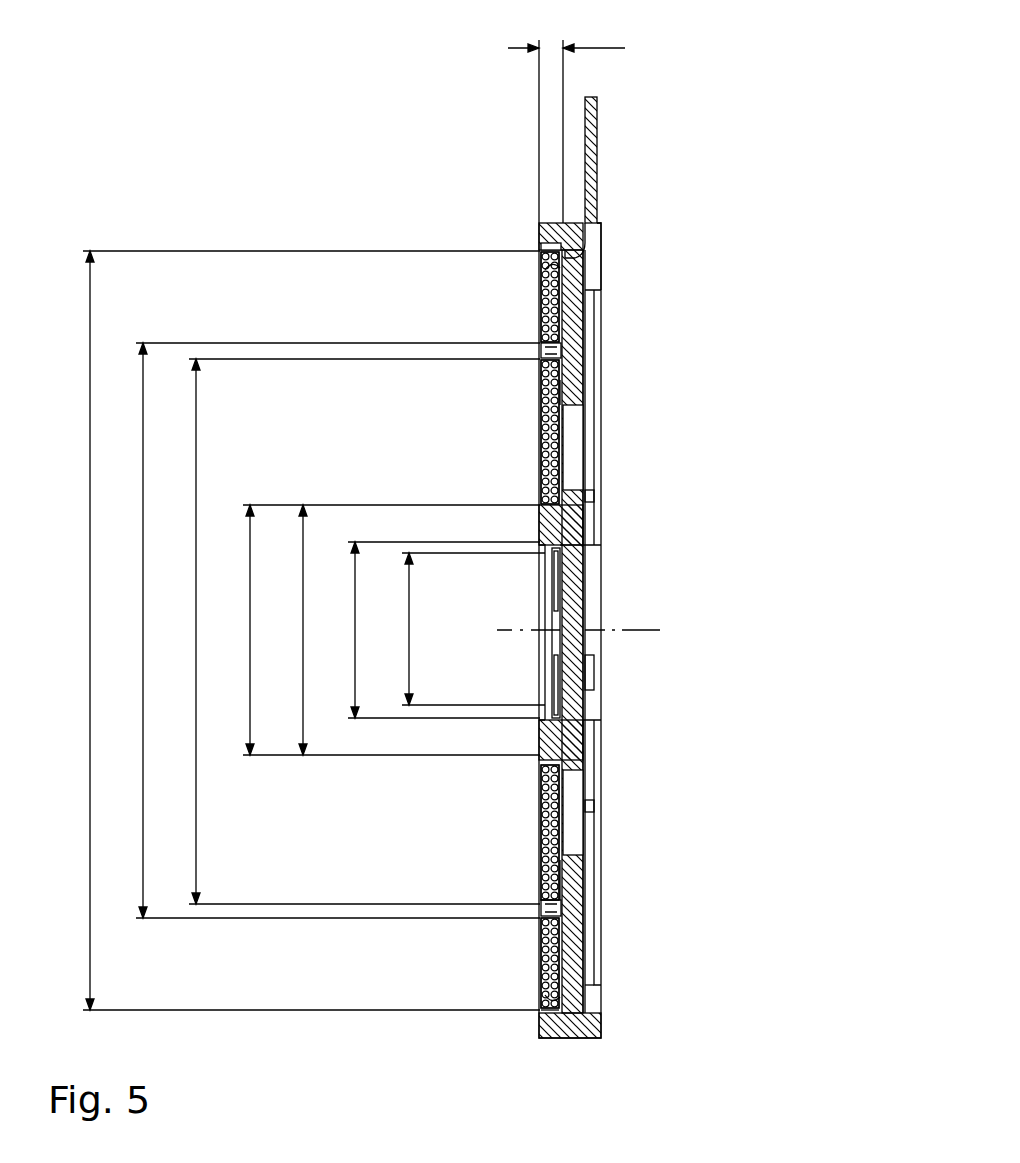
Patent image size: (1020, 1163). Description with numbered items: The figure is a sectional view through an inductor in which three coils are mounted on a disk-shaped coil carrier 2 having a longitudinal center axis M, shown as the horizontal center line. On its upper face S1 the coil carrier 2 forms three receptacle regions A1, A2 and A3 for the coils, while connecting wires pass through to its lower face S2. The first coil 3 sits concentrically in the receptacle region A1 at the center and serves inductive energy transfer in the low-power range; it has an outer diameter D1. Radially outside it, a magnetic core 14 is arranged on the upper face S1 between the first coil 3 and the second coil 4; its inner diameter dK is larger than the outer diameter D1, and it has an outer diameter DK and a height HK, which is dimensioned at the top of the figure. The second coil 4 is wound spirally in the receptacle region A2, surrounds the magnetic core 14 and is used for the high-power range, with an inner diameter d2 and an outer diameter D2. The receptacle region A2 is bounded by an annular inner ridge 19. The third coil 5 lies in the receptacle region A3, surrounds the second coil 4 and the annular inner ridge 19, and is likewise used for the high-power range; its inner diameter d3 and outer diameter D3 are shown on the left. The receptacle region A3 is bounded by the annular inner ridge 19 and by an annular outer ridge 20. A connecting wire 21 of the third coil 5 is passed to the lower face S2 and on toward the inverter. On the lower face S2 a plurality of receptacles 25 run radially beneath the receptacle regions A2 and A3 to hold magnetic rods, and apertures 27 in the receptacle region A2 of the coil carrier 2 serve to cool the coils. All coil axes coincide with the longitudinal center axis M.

The coil carrier 2 is at (536, 222).
The annular outer ridge 20 is at (540, 237).
The connecting wire 21 is at (597, 157).
The third coil 5 is at (540, 306).
The annular inner ridge 19 is at (538, 358).
The second coil 4 is at (540, 436).
The magnetic core 14 is at (540, 535).
The first coil 3 is at (560, 585).
The apertures 27 is at (575, 450).
The receptacles 25 is at (594, 320).
The receptacle region A1 is at (560, 548).
The receptacle region A2 is at (565, 393).
The receptacle region A3 is at (585, 283).
The longitudinal center axis M is at (608, 630).
The upper face S1 is at (542, 1008).
The lower face S2 is at (595, 976).
The height of the magnetic core HK is at (566, 120).
The outer diameter of the third coil D3 is at (295, 630).
The inner diameter of the third coil d3 is at (324, 630).
The outer diameter of the second coil D2 is at (349, 631).
The inner diameter of the second coil d2 is at (377, 630).
The outer diameter of the magnetic core DK is at (282, 630).
The inner diameter of the magnetic core dK is at (427, 630).
The outer diameter of the first coil D1 is at (458, 629).